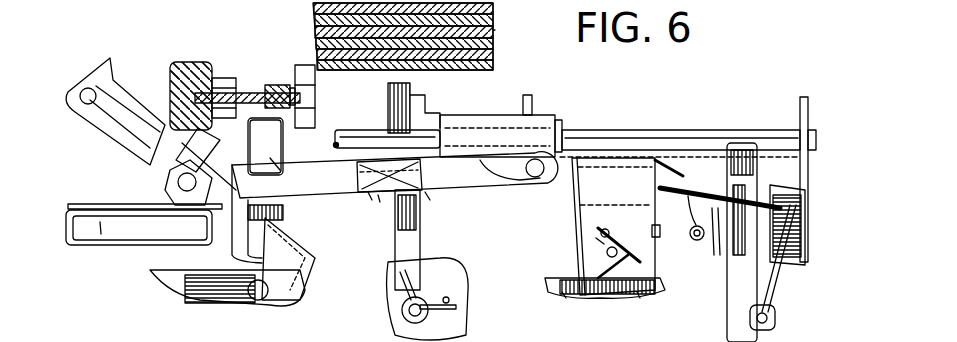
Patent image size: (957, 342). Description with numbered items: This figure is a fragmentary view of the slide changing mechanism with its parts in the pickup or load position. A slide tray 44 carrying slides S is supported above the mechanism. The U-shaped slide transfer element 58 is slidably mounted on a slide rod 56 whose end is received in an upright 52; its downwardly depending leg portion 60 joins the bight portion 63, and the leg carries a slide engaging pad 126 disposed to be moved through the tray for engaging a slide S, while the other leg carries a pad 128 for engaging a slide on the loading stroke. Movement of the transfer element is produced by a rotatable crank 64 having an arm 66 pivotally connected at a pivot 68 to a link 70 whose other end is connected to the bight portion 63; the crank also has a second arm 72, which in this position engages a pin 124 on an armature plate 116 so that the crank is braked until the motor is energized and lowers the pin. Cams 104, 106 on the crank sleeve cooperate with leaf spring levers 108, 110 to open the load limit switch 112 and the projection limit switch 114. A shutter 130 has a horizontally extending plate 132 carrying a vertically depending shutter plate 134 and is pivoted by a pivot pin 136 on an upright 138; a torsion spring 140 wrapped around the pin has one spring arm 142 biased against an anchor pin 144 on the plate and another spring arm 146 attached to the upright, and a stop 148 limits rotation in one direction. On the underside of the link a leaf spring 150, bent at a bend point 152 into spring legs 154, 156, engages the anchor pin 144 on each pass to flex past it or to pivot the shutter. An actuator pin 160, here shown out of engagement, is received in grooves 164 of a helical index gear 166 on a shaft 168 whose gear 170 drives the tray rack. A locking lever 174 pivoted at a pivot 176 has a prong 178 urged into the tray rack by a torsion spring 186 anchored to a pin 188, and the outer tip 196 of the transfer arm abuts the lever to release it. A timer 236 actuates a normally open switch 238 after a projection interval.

The slide tray 44 is at (312, 14).
The slide S is at (495, 30).
The upright 52 is at (800, 105).
The slide rod 56 is at (634, 132).
The slide transfer element 58 is at (540, 125).
The leg portion 60 is at (223, 78).
The bight portion 63 is at (490, 128).
The crank 64 is at (118, 138).
The arm 66 is at (92, 118).
The pivot 68 is at (84, 88).
The link 70 is at (285, 210).
The second arm 72 is at (297, 228).
The cam 104 is at (139, 227).
The cam 106 is at (166, 184).
The leaf spring lever 108 is at (118, 205).
The leaf spring lever 110 is at (266, 146).
The load limit switch 112 is at (100, 232).
The projection limit switch 114 is at (273, 163).
The armature plate 116 is at (165, 273).
The pin 124 is at (225, 302).
The slide engaging pad 126 is at (276, 85).
The pad 128 is at (530, 95).
The shutter 130 is at (574, 198).
The horizontally extending plate 132 is at (585, 178).
The shutter plate 134 is at (598, 160).
The pivot pin 136 is at (638, 296).
The upright 138 is at (590, 298).
The torsion spring 140 is at (607, 252).
The spring arm 142 is at (598, 240).
The anchor pin 144 is at (606, 229).
The spring arm 146 is at (565, 294).
The stop 148 is at (656, 232).
The leaf spring 150 is at (368, 162).
The bend point 152 is at (380, 198).
The spring leg 154 is at (428, 195).
The spring leg 156 is at (370, 194).
The actuator pin 160 is at (266, 146).
The groove 164 is at (192, 62).
The helical index gear 166 is at (172, 72).
The shaft 168 is at (246, 93).
The gear 170 is at (303, 65).
The locking lever 174 is at (400, 235).
The pivot 176 is at (402, 310).
The prong 178 is at (410, 95).
The torsion spring 186 is at (455, 312).
The pin 188 is at (466, 262).
The outer tip 196 is at (424, 113).
The timer 236 is at (770, 330).
The switch 238 is at (790, 262).